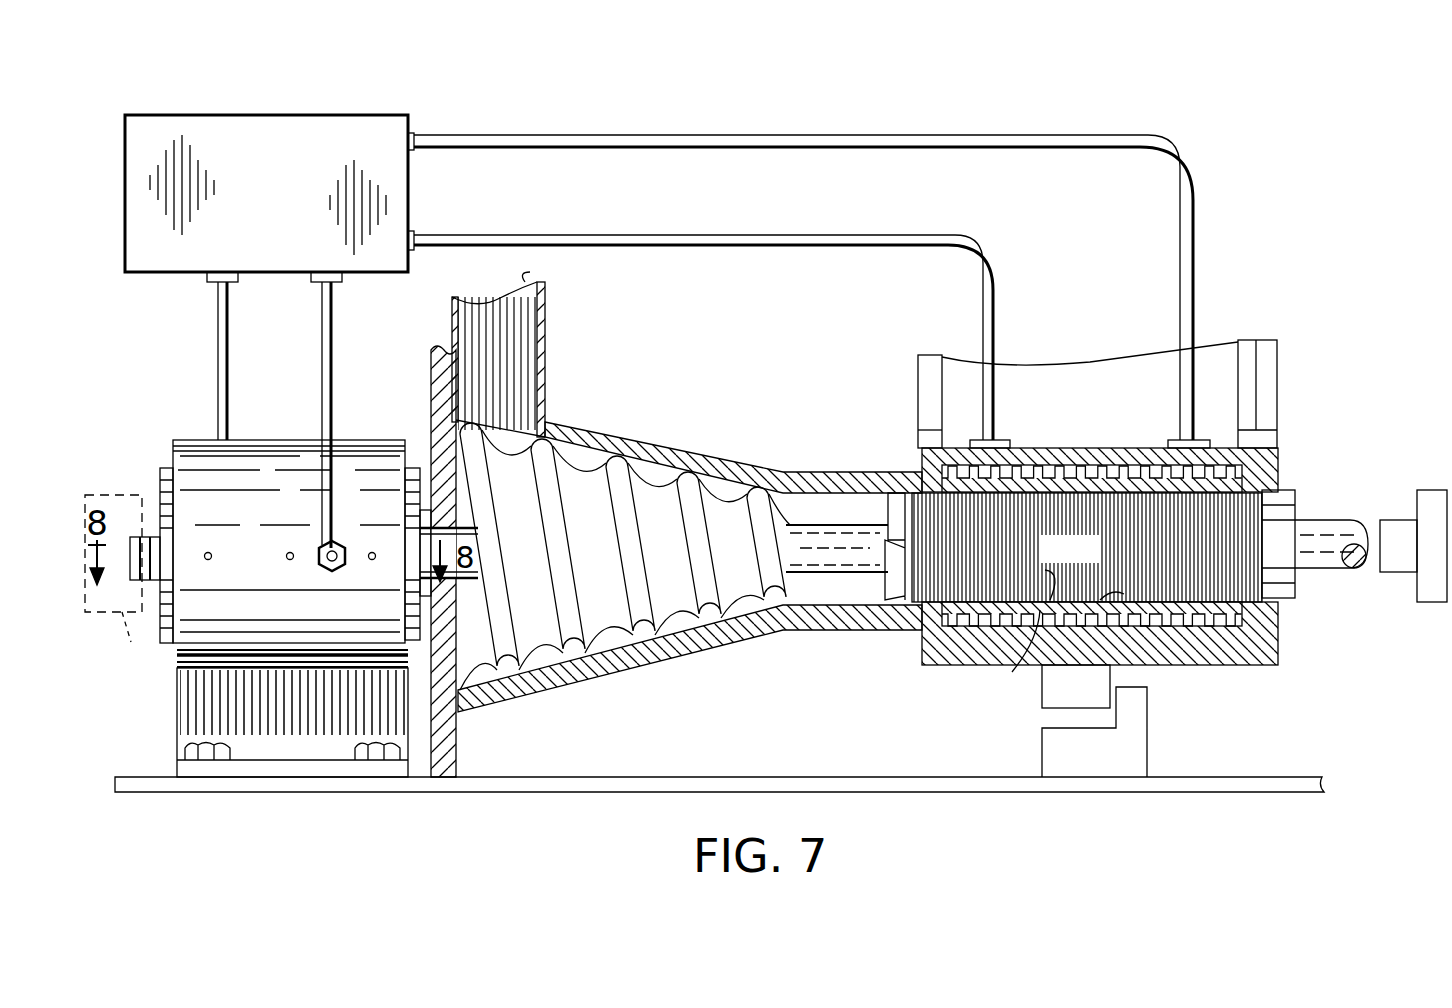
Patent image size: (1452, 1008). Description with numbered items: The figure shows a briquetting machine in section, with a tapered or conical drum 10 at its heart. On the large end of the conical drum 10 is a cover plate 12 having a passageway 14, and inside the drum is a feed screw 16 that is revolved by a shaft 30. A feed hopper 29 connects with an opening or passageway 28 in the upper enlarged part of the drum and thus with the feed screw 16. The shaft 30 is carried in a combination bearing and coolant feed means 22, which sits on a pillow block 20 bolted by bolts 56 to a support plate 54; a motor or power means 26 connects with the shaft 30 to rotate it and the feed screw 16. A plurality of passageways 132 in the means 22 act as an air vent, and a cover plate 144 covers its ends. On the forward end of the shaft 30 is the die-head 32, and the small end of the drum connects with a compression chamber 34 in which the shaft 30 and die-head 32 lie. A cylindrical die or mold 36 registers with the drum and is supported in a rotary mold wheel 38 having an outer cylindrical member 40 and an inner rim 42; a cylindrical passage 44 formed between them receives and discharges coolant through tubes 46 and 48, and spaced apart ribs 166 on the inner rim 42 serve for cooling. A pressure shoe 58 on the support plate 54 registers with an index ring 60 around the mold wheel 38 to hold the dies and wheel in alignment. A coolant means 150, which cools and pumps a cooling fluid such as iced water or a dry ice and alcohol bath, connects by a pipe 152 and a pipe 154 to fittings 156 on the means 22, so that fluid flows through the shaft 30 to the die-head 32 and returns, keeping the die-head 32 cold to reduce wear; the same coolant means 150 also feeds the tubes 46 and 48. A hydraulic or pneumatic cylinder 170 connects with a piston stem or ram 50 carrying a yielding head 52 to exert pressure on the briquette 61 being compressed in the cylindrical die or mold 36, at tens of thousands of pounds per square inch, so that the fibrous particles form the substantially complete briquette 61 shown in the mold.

The tapered or conical drum 10 is at (760, 452).
The cover plate 12 is at (462, 718).
The passageway 14 is at (428, 515).
The feed screw 16 is at (600, 559).
The pillow block 20 is at (185, 706).
The combination bearing and coolant feed means 22 is at (170, 450).
The power means 26 is at (138, 636).
The opening or passageway 28 is at (545, 333).
The feed hopper 29 is at (538, 275).
The shaft 30 is at (848, 530).
The die-head 32 is at (886, 590).
The compression chamber 34 is at (832, 600).
The cylindrical die or mold 36 is at (1278, 466).
The rotary mold wheel 38 is at (1280, 425).
The outer cylindrical member 40 is at (1282, 450).
The inner rim 42 is at (1128, 588).
The cylindrical passage 44 is at (1010, 652).
The tube 46 is at (990, 318).
The tube 48 is at (1185, 318).
The piston stem 50 is at (1310, 522).
The yielding head 52 is at (1296, 494).
The support plate 54 is at (583, 790).
The bolts 56 is at (232, 750).
The pressure shoe 58 is at (1147, 725).
The index ring 60 is at (1043, 700).
The briquette 61 is at (1054, 562).
The passageways 132 is at (284, 556).
The cover plate 144 is at (160, 470).
The coolant means 150 is at (282, 179).
The pipe 152 is at (217, 380).
The pipe 154 is at (323, 380).
The fitting 156 is at (318, 550).
The ribs 166 is at (1028, 585).
The hydraulic or pneumatic cylinder 170 is at (1425, 490).